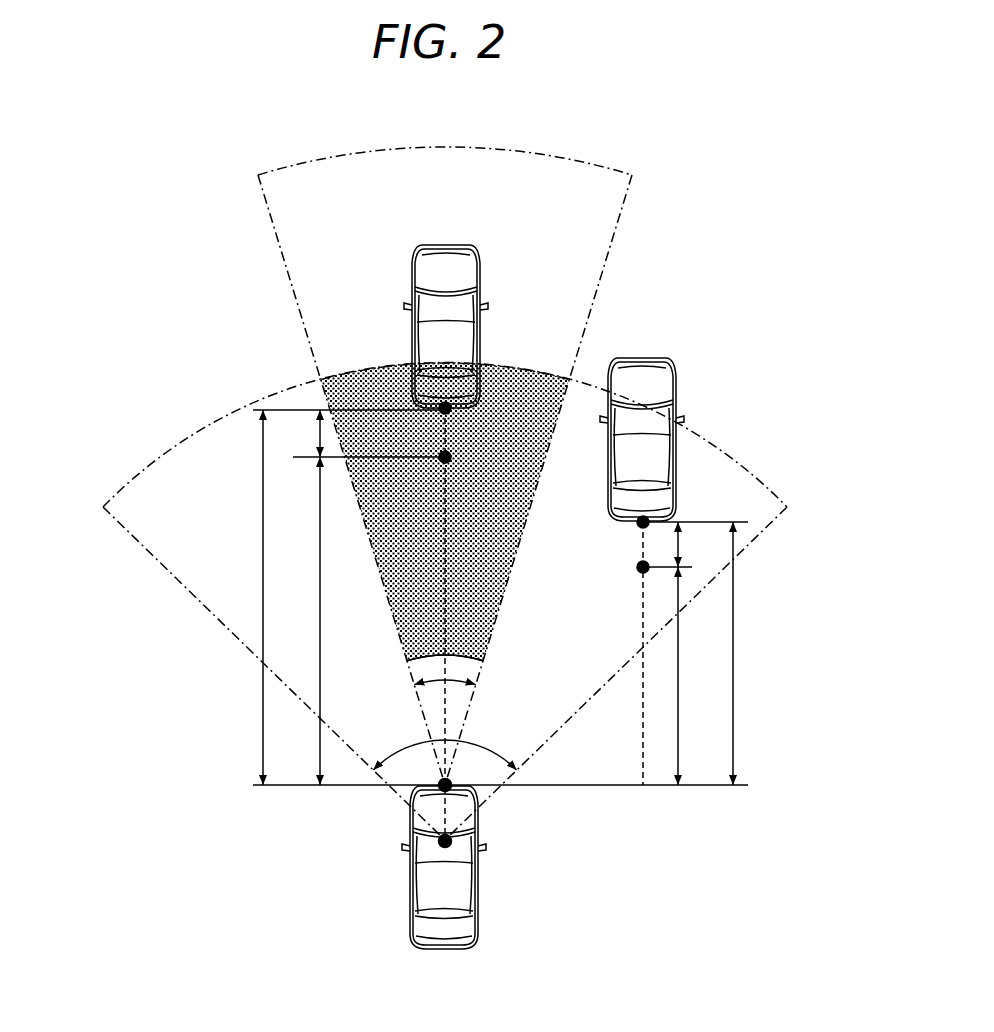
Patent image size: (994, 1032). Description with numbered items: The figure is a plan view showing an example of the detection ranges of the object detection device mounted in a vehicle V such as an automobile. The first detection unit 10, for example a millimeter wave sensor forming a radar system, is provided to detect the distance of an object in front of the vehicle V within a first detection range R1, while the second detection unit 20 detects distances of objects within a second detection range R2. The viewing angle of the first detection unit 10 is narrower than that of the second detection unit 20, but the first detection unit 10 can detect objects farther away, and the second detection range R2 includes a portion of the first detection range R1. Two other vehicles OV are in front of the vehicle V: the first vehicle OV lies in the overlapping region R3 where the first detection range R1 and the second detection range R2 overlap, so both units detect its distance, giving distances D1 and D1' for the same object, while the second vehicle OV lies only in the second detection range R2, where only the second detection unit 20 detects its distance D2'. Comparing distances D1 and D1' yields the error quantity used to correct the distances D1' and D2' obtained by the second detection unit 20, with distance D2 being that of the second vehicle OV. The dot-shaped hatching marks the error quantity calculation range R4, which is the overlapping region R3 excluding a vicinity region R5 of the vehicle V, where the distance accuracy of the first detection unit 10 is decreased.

The first detection unit 10 is at (432, 797).
The second detection unit 20 is at (439, 852).
The first detection range R1 is at (280, 248).
The second detection range R2 is at (168, 572).
The overlapping region R3 is at (345, 369).
The error quantity calculation range R4 is at (497, 530).
The vicinity region R5 is at (427, 727).
The other vehicle OV is at (485, 240).
The vehicle V is at (505, 935).
The distance D1 is at (248, 597).
The distance D1' is at (340, 621).
The distance D2 is at (752, 653).
The distance D2' is at (701, 676).